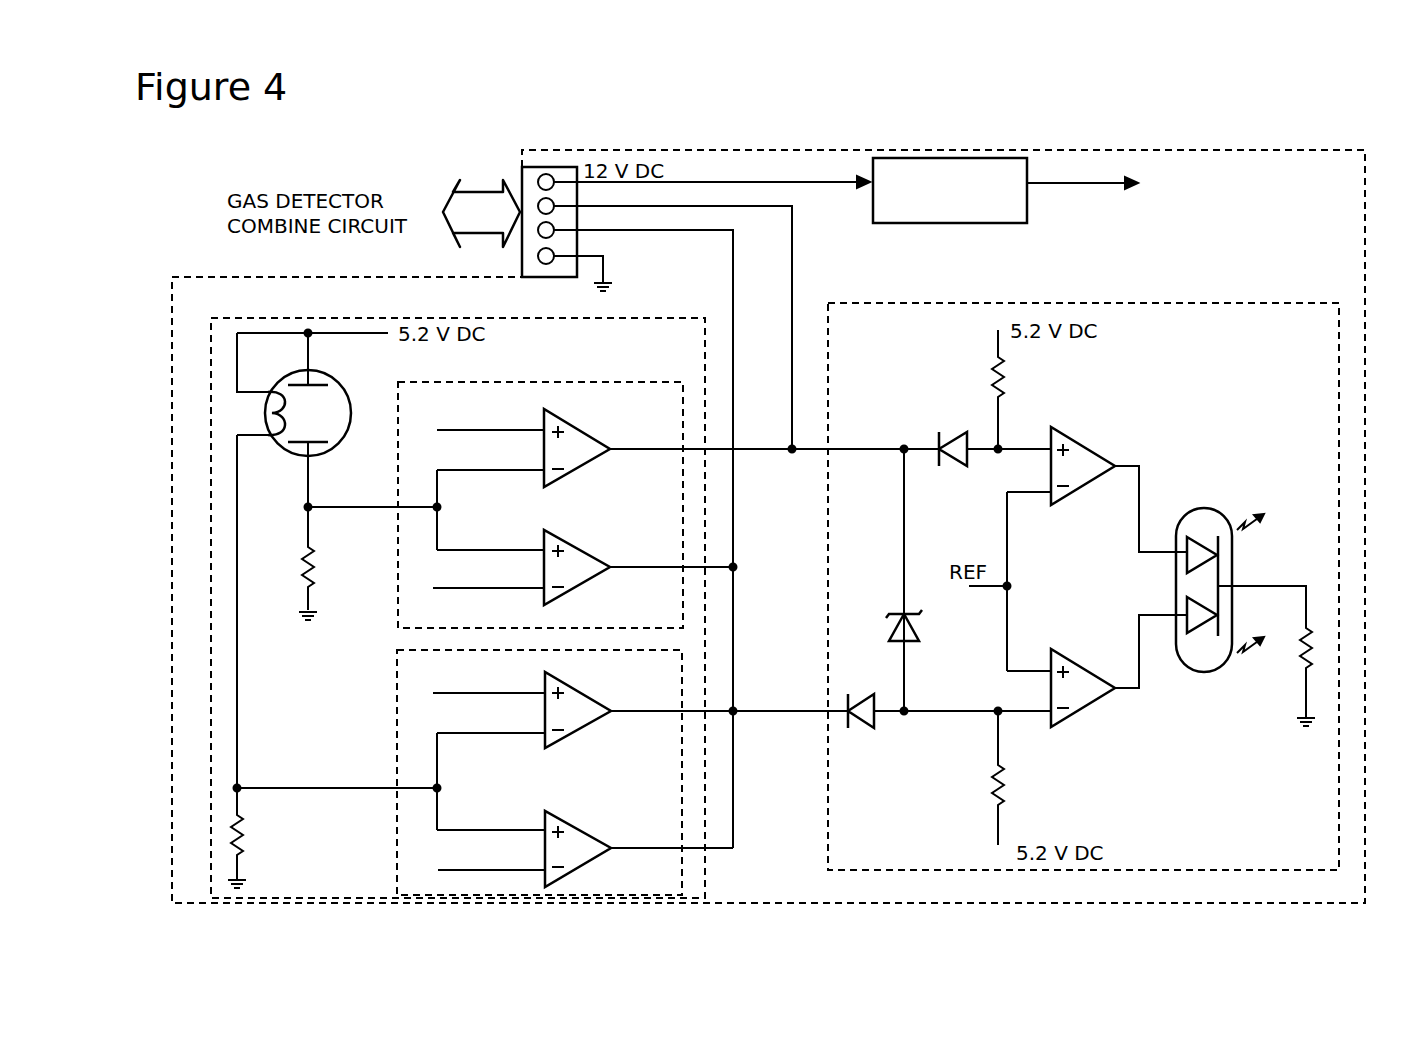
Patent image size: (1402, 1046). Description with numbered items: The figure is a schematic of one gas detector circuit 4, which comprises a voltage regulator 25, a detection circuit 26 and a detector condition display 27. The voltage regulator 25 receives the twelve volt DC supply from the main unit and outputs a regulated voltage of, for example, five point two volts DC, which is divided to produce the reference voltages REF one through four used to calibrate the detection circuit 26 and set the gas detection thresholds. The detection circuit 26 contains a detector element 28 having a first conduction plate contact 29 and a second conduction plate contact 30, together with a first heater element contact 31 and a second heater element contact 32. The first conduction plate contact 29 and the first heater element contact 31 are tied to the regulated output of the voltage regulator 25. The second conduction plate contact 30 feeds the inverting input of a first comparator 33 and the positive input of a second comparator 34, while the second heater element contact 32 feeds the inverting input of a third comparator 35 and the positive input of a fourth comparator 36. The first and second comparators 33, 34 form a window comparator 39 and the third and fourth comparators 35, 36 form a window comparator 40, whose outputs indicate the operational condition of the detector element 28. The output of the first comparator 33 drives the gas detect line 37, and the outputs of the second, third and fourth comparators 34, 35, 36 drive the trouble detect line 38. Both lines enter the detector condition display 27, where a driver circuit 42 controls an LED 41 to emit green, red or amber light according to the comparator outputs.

The gas detector circuit 4 is at (768, 511).
The voltage regulator 25 is at (1027, 204).
The detection circuit 26 is at (458, 595).
The detector condition display 27 is at (1083, 570).
The detector element 28 is at (350, 388).
The first conduction plate contact 29 is at (310, 346).
The second conduction plate contact 30 is at (308, 478).
The first heater element contact 31 is at (250, 392).
The second heater element contact 32 is at (243, 437).
The first comparator 33 is at (580, 432).
The second comparator 34 is at (580, 548).
The third comparator 35 is at (585, 694).
The fourth comparator 36 is at (585, 832).
The gas detect line 37 is at (673, 317).
The trouble detect line 38 is at (643, 528).
The window comparator 39 is at (550, 382).
The window comparator 40 is at (397, 722).
The LED 41 is at (1214, 506).
The driver circuit 42 is at (1113, 412).